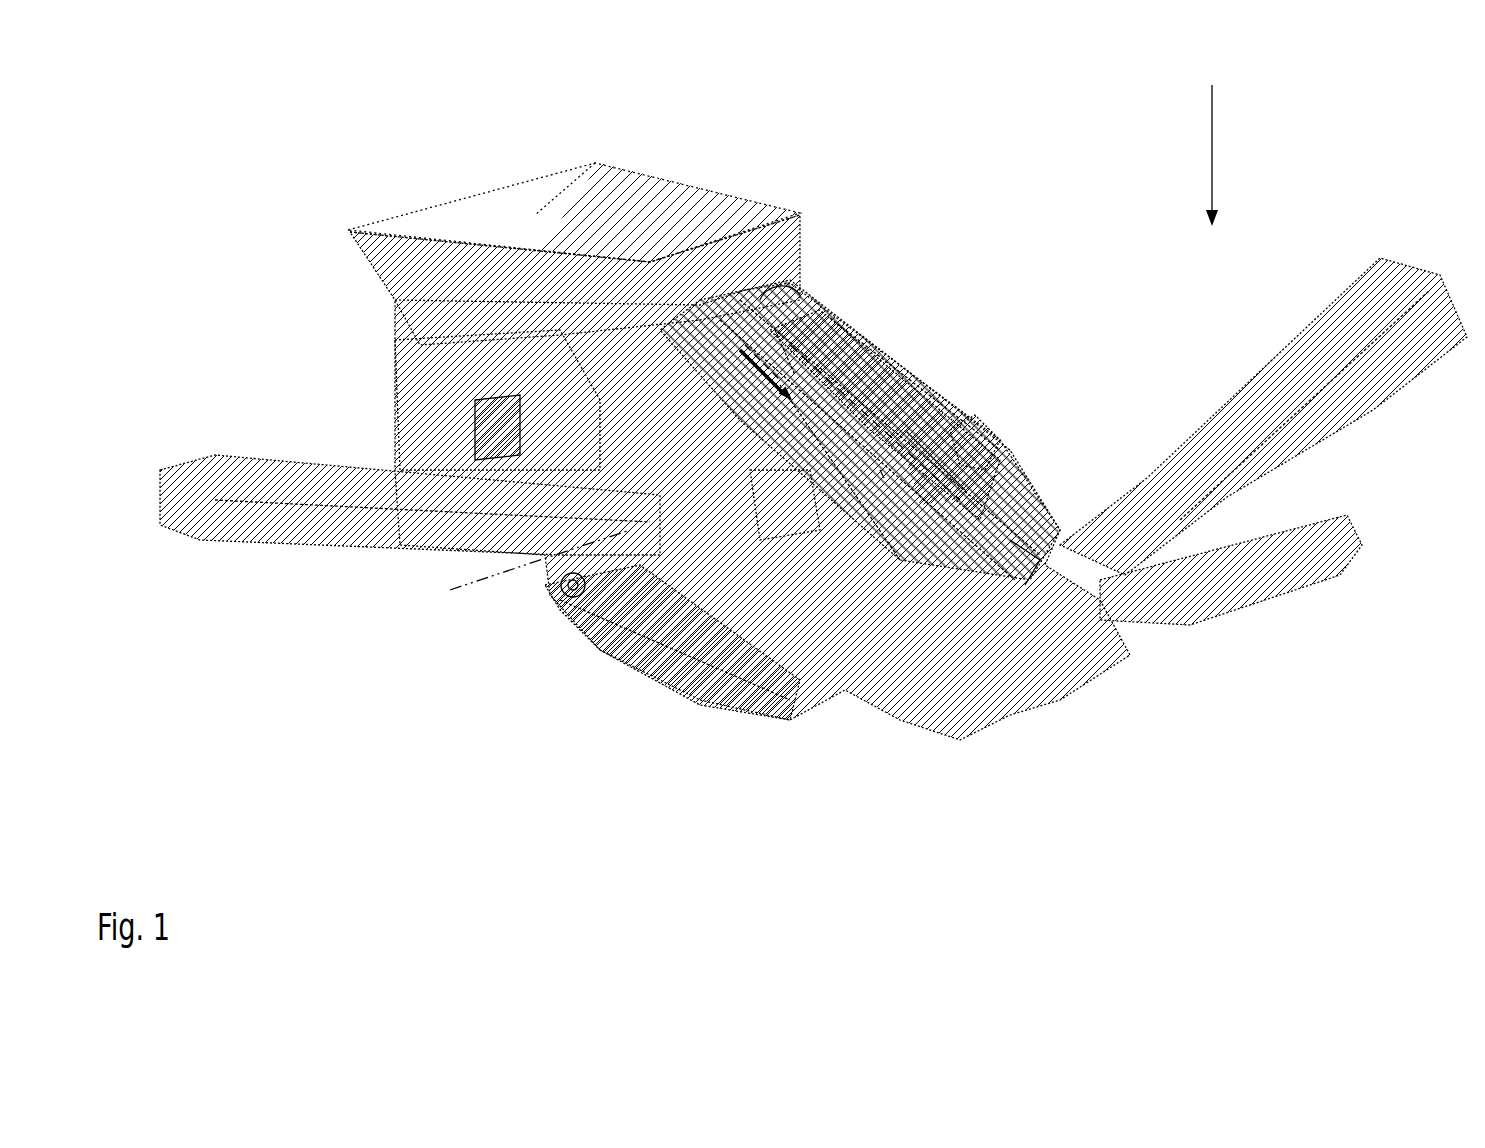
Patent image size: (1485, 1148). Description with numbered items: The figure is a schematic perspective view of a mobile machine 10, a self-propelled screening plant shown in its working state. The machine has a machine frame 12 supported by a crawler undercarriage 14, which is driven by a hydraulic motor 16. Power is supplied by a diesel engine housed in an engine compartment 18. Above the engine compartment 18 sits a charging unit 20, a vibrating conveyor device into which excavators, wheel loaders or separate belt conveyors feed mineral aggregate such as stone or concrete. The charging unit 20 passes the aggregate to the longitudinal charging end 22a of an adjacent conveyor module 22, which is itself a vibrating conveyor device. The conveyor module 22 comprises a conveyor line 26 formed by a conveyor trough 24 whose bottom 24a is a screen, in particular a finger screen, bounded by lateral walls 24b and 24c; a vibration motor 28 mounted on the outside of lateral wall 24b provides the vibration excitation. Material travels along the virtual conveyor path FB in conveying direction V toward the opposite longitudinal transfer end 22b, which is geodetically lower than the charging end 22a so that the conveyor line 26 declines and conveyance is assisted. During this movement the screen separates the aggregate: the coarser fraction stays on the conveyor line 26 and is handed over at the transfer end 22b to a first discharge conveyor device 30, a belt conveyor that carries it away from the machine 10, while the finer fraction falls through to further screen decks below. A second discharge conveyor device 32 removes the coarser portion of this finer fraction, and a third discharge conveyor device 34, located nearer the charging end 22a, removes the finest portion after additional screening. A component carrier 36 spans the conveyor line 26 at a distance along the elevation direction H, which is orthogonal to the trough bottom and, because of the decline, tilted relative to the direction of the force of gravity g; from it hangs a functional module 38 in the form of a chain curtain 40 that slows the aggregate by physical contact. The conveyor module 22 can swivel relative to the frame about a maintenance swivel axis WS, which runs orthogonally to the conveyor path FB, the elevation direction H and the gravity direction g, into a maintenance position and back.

The mobile machine 10 is at (272, 125).
The machine frame 12 is at (920, 648).
The crawler undercarriage 14 is at (675, 670).
The hydraulic motor 16 is at (573, 588).
The engine compartment 18 is at (495, 413).
The charging unit 20 is at (556, 172).
The conveyor module 22 is at (928, 368).
The longitudinal charging end 22a is at (790, 300).
The longitudinal transfer end 22b is at (1025, 550).
The conveyor trough 24 is at (918, 418).
The conveyor line 26 is at (1000, 338).
The bottom 24a is at (817, 390).
The lateral wall 24b is at (890, 565).
The lateral wall 24c is at (795, 375).
The vibration motor 28 is at (773, 497).
The first discharge conveyor device 30 is at (1336, 507).
The second discharge conveyor device 32 is at (1294, 352).
The third discharge conveyor device 34 is at (270, 458).
The component carrier 36 is at (966, 428).
The functional module 38 is at (955, 466).
The chain curtain 40 is at (1065, 416).
The conveying direction V is at (765, 368).
The conveyor path FB is at (790, 372).
The elevation direction H is at (880, 478).
The maintenance swivel axis WS is at (452, 590).
The direction of the force of gravity g is at (1212, 135).